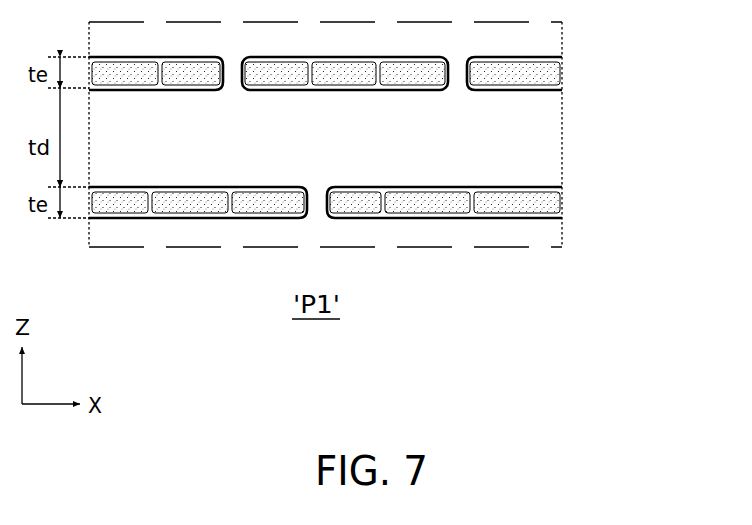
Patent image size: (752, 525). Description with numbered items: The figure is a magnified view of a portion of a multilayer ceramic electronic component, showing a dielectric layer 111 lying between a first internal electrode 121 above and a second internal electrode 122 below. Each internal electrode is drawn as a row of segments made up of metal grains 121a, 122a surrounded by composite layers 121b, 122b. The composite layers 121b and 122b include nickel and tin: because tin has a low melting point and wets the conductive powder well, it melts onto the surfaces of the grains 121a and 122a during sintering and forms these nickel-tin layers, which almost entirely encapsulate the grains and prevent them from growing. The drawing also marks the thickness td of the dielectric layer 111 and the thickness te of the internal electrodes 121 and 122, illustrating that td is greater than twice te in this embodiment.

The dielectric layer 111 is at (552, 128).
The first internal electrode 121 is at (406, 54).
The metal grains 121a is at (551, 77).
The composite layer 121b is at (562, 58).
The second internal electrode 122 is at (406, 187).
The metal grains 122a is at (555, 207).
The composite layer 122b is at (562, 188).